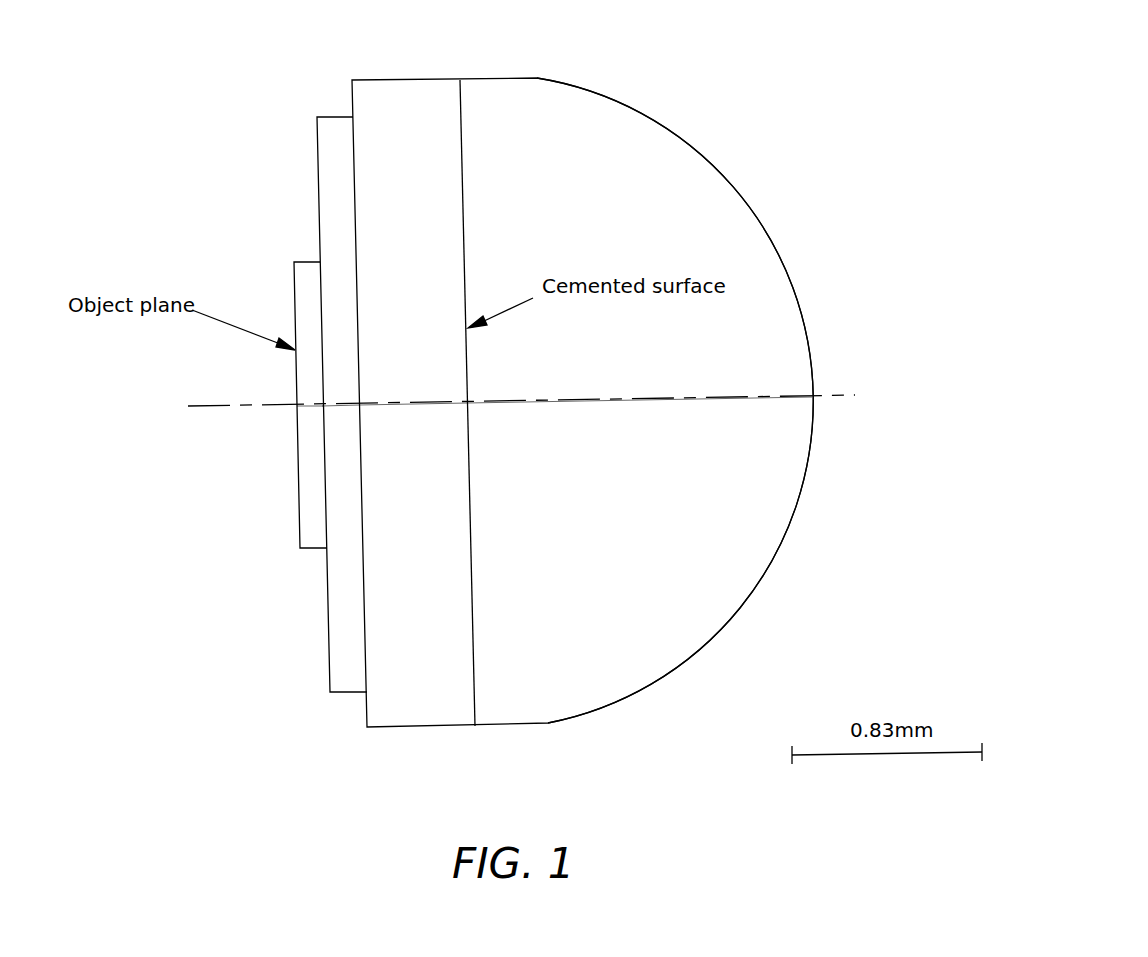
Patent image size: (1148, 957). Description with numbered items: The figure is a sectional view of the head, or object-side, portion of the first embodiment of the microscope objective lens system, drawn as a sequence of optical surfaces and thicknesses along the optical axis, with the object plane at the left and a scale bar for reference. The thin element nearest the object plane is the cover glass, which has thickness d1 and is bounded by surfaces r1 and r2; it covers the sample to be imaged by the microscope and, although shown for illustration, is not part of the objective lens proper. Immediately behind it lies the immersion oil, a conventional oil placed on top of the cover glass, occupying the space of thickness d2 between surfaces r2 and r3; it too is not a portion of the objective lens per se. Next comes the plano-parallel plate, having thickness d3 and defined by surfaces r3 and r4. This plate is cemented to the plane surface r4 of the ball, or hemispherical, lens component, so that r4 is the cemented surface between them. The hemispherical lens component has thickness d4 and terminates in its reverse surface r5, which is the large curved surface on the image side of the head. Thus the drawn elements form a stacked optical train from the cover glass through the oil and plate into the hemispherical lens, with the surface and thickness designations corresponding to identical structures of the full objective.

The surface r1 is at (292, 280).
The surface r2 is at (316, 148).
The surface r3 is at (352, 93).
The plane surface r4 is at (460, 113).
The reverse surface r5 is at (653, 122).
The thickness d1 is at (308, 405).
The thickness d2 is at (345, 405).
The thickness d3 is at (422, 403).
The thickness d4 is at (575, 400).